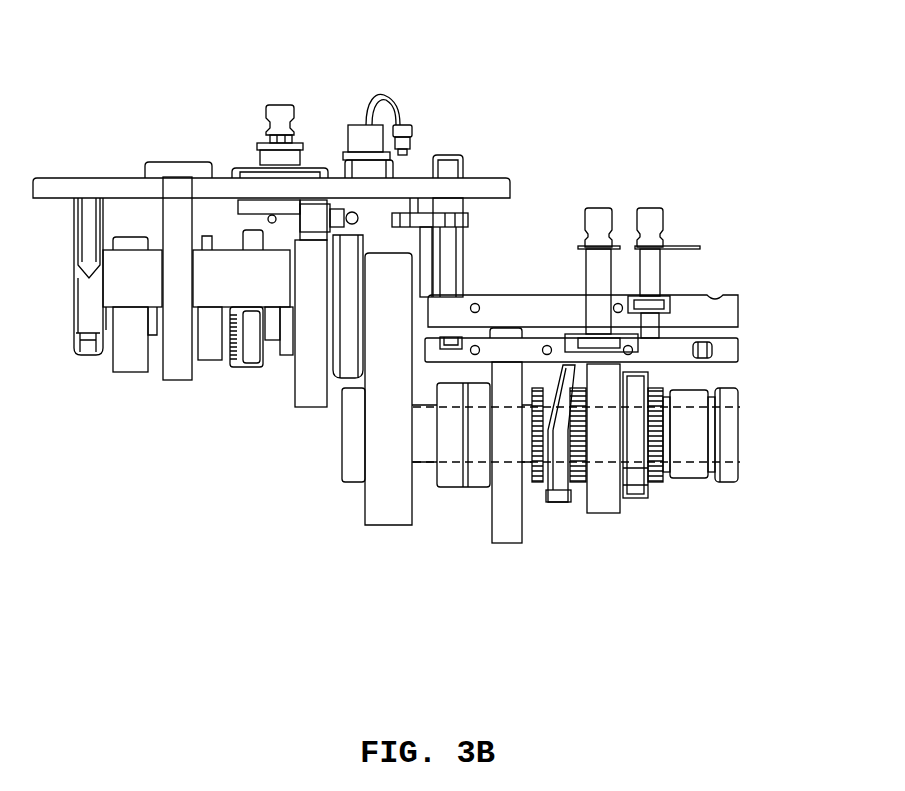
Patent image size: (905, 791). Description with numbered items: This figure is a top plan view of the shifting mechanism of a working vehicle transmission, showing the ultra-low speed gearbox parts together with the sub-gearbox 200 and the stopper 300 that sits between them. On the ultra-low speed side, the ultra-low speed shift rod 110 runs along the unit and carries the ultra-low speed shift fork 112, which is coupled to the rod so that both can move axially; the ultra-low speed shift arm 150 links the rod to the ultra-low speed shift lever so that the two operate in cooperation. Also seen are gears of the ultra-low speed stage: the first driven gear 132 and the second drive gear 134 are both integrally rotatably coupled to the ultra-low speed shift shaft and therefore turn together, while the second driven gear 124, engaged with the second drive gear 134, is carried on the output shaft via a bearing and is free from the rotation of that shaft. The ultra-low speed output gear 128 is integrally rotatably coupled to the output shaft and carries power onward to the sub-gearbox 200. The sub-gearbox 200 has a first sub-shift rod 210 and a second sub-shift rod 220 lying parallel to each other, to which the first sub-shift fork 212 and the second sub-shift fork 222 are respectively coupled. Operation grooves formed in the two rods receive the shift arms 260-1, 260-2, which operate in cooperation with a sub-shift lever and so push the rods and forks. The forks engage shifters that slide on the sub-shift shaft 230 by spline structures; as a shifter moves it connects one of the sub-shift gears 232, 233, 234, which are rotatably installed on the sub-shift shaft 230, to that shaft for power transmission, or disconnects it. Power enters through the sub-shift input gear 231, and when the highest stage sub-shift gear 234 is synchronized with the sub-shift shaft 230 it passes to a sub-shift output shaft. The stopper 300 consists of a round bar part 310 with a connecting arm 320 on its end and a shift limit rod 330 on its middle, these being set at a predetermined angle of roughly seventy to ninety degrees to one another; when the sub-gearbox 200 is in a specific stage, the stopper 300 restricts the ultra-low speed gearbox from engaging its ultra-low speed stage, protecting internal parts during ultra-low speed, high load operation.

The ultra-low speed shift rod 110 is at (305, 202).
The ultra-low speed shift fork 112 is at (257, 328).
The second driven gear 124 is at (310, 400).
The ultra-low speed output gear 128 is at (385, 270).
The first driven gear 132 is at (173, 227).
The second drive gear 134 is at (310, 250).
The ultra-low speed shift arm 150 is at (260, 208).
The sub-gearbox 200 is at (780, 443).
The first sub-shift rod 210 is at (726, 348).
The first sub-shift fork 212 is at (555, 492).
The second sub-shift rod 220 is at (728, 308).
The second sub-shift fork 222 is at (637, 483).
The sub-shift shaft 230 is at (733, 415).
The sub-shift input gear 231 is at (388, 517).
The sub-shift gear 232 is at (692, 470).
The sub-shift gear 233 is at (602, 502).
The highest stage sub-shift gear 234 is at (512, 535).
The shift arm 260-1 is at (600, 215).
The shift arm 260-2 is at (648, 213).
The stopper 300 is at (557, 83).
The round bar part 310 is at (448, 240).
The connecting arm 320 is at (450, 337).
The shift limit rod 330 is at (403, 217).